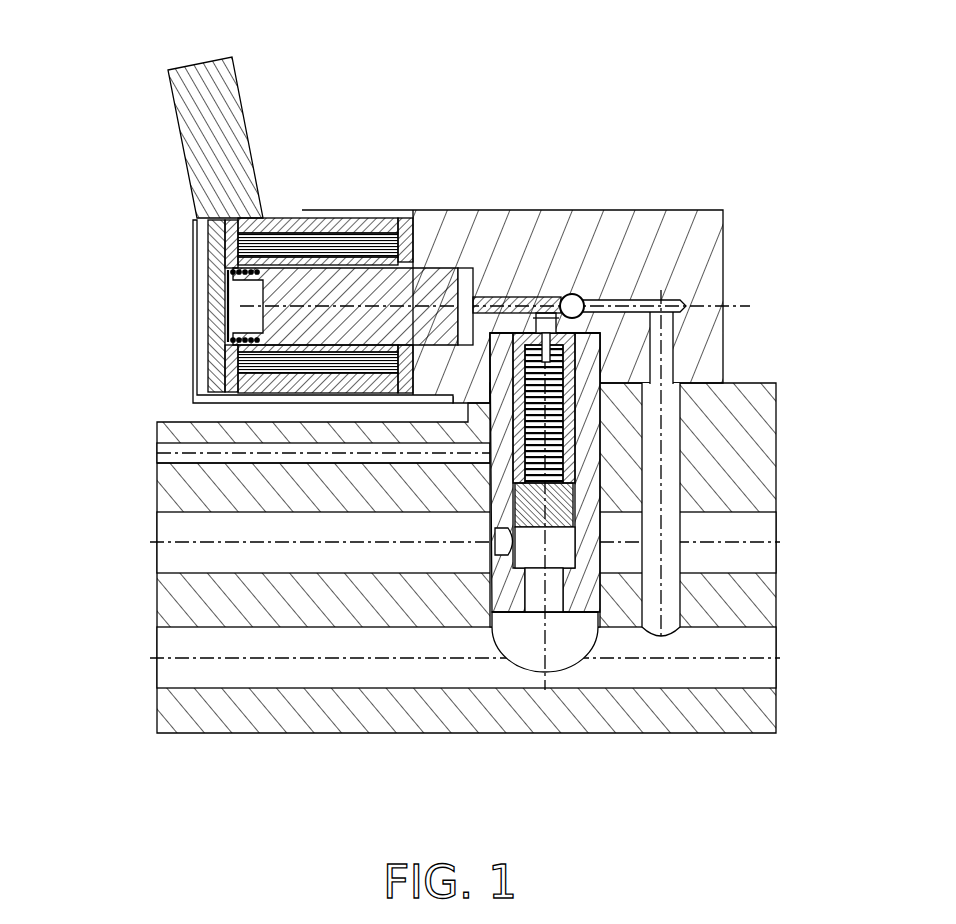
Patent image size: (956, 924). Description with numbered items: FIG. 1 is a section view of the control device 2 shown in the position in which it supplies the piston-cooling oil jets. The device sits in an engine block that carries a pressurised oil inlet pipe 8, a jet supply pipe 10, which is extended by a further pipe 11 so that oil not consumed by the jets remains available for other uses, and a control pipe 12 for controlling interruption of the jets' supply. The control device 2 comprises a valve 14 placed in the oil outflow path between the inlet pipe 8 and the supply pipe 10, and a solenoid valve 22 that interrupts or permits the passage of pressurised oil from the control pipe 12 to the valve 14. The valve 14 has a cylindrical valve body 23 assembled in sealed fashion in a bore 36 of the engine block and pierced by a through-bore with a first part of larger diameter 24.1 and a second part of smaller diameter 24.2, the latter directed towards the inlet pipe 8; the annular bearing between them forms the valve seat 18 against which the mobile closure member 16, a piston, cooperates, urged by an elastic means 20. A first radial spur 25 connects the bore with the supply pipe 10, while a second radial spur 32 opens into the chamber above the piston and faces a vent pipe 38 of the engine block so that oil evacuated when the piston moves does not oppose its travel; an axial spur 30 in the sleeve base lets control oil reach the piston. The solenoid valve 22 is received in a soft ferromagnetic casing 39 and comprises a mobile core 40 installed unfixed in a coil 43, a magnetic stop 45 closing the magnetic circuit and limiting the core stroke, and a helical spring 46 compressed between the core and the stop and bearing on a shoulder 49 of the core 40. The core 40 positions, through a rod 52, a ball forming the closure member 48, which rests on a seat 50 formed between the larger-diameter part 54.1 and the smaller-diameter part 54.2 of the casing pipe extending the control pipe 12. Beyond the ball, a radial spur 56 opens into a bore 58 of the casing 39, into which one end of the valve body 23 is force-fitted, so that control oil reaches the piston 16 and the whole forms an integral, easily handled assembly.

The control device 2 is at (462, 403).
The pressurised oil inlet pipe 8 is at (757, 452).
The jet supply pipe 10 is at (183, 558).
The pipe 11 is at (177, 643).
The control pipe 12 is at (673, 467).
The valve 14 is at (602, 535).
The mobile closure member (piston) 16 is at (557, 507).
The valve seat 18 is at (572, 556).
The elastic means 20 is at (577, 398).
The solenoid valve 22 is at (294, 230).
The valve body 23 is at (502, 462).
The first part of larger diameter 24.1 is at (570, 543).
The second part of smaller diameter 24.2 is at (527, 597).
The first radial spur 25 is at (490, 548).
The axial spur 30 is at (555, 337).
The second radial spur 32 is at (495, 453).
The bore of the engine block 36 is at (490, 595).
The vent pipe 38 is at (170, 442).
The casing 39 is at (678, 220).
The core 40 is at (257, 308).
The coil 43 is at (256, 237).
The magnetic stop 45 is at (257, 298).
The elastic means (helical spring) 46 is at (235, 273).
The closure member (ball) 48 is at (600, 297).
The shoulder 49 is at (232, 343).
The seat 50 is at (580, 317).
The rod 52 is at (462, 300).
The part of larger diameter 54.1 is at (505, 293).
The part of smaller diameter 54.2 is at (627, 303).
The radial spur 56 is at (545, 300).
The bore of the casing 58 is at (502, 337).